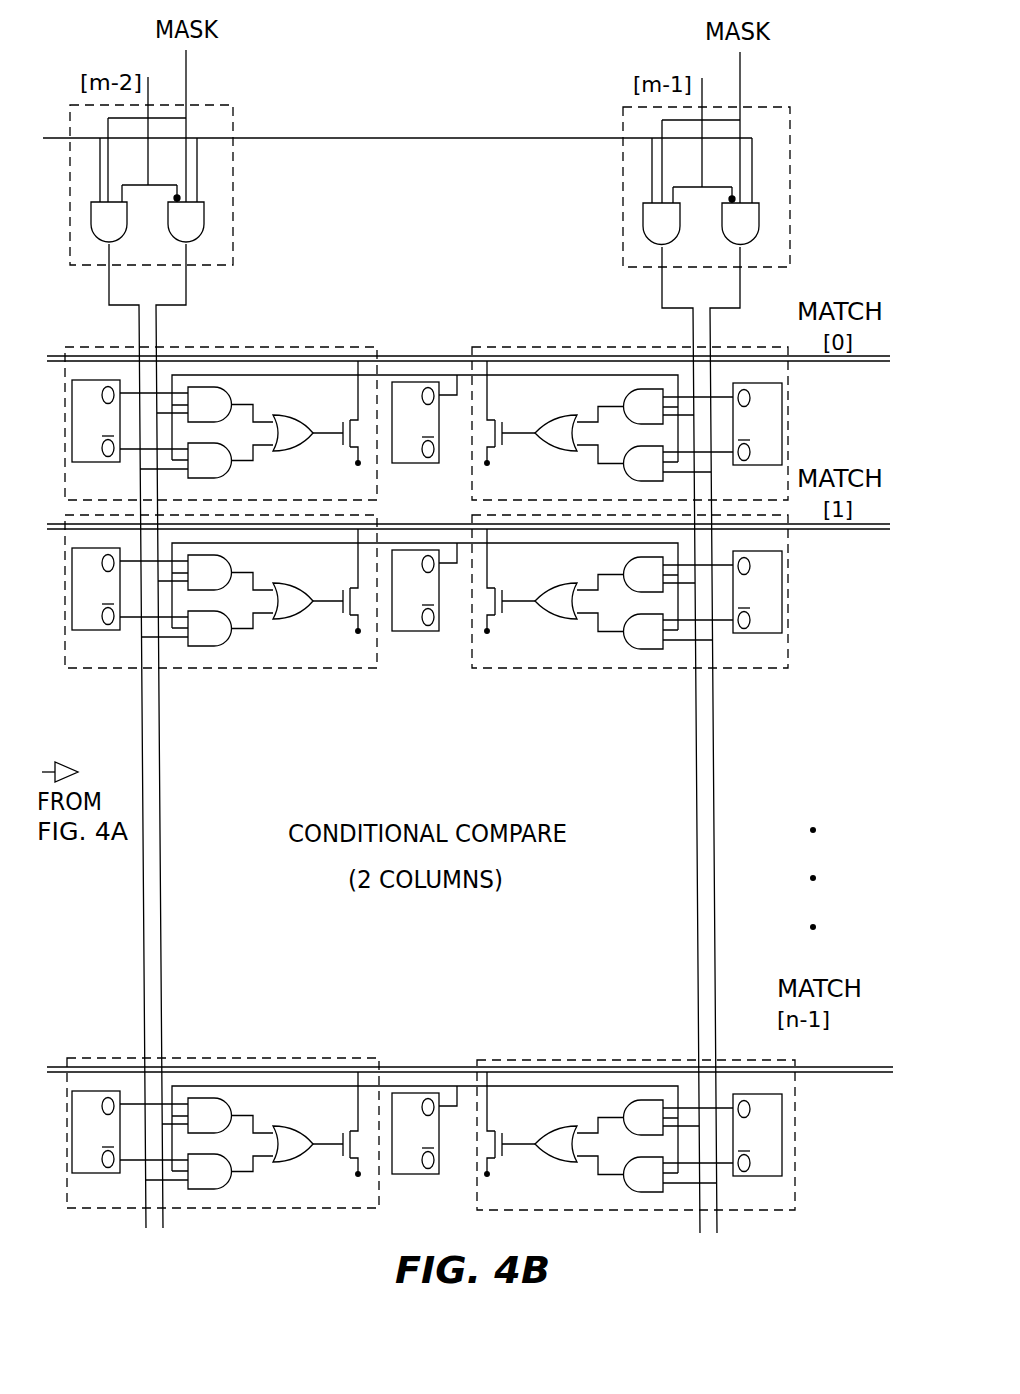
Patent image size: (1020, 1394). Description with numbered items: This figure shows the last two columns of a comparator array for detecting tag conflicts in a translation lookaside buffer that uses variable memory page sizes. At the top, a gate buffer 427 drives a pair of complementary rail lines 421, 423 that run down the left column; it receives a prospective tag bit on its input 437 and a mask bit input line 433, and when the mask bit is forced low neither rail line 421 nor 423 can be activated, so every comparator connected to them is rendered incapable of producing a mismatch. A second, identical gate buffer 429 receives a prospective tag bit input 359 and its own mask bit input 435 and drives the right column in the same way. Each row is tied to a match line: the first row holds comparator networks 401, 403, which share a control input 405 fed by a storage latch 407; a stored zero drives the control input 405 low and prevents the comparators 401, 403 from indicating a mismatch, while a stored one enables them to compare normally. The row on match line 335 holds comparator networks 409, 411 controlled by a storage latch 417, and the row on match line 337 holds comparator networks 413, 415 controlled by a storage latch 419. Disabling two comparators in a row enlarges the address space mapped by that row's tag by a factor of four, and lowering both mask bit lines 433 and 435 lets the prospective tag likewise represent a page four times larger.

The gate buffer input 437 is at (150, 80).
The mask bit input line 433 is at (187, 80).
The gate buffer 427 is at (236, 125).
The prospective tag bit input 359 is at (704, 88).
The mask bit input 435 is at (741, 92).
The gate buffer 429 is at (793, 127).
The rail line 421 is at (138, 332).
The rail line 423 is at (160, 333).
The comparator network 401 is at (352, 345).
The comparator network 403 is at (577, 345).
The control input 405 is at (437, 374).
The storage latch 407 is at (412, 381).
The match line 335 is at (393, 523).
The match line 337 is at (415, 1066).
The comparator network 409 is at (208, 670).
The comparator network 411 is at (582, 671).
The storage latch 417 is at (410, 634).
The comparator network 413 is at (238, 1056).
The comparator network 415 is at (635, 1057).
The storage latch 419 is at (413, 1176).